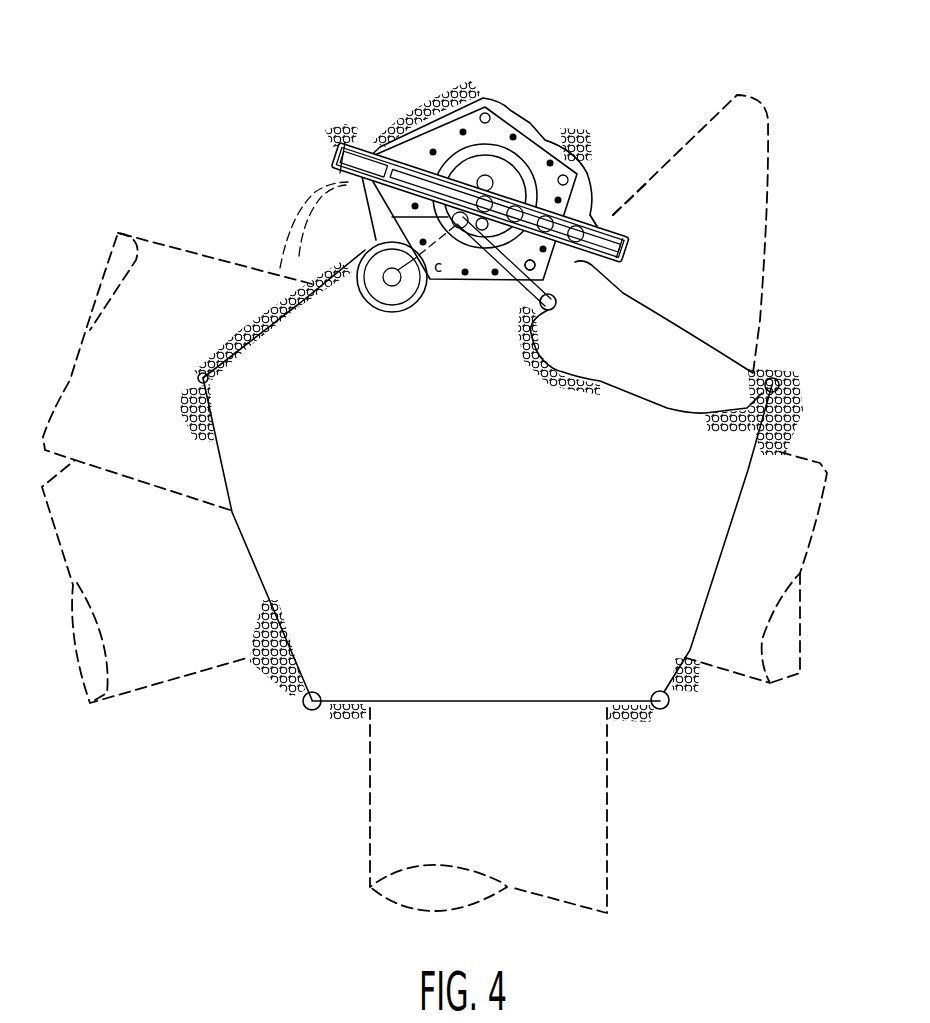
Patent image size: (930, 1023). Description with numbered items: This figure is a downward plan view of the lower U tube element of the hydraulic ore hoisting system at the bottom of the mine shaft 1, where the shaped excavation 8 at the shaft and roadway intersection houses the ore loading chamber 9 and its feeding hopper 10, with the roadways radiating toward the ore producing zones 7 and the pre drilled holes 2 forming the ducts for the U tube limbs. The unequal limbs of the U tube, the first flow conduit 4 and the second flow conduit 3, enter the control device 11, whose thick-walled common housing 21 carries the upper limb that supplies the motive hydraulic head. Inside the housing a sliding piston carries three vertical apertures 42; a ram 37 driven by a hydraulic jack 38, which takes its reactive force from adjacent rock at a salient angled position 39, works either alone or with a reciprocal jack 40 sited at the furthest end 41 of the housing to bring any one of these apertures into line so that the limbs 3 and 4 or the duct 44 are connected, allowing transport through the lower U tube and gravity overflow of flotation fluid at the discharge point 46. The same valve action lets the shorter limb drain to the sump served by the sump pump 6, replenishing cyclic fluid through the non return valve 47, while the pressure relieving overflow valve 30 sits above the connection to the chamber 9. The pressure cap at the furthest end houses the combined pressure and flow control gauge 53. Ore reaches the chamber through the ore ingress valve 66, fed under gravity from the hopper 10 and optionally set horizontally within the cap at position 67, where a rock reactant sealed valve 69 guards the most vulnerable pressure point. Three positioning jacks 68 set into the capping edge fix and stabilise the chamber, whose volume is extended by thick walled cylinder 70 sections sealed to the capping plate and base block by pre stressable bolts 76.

The mine shaft 1 is at (718, 637).
The pre drilled holes 2 is at (320, 690).
The second flow conduit (upper limb of U tube) 3 is at (443, 80).
The first flow conduit (limb of U tube) 4 is at (505, 210).
The gravity discharge point 46 is at (505, 210).
The sump pump 6 is at (553, 306).
The ore producing zones 7 is at (215, 655).
The shaped excavation 8 is at (552, 137).
The ore loading chamber 9 is at (547, 132).
The feeding hopper 10 is at (373, 285).
The control device 11 is at (337, 153).
The common housing 21 is at (600, 214).
The pressure relieving overflow valve 30 is at (500, 160).
The ram 37 is at (340, 182).
The hydraulic jack 38 is at (373, 109).
The reciprocal jack 40 is at (363, 143).
The salient angled position 39 is at (363, 164).
The furthest end of common housing 41 is at (529, 219).
The vertical apertures 42 is at (527, 253).
The duct 44 is at (590, 215).
The non return valve 47 is at (478, 253).
The combined pressure and flow control gauge 53 is at (619, 248).
The ore ingress valve 66 is at (447, 277).
The position of ore ingress valve in pressure cap 67 is at (428, 237).
The positioning jacks 68 is at (443, 143).
The rock reactant sealed valve 69 is at (397, 208).
The thick walled cylinder 70 is at (507, 170).
The pre stressable bolts 76 is at (447, 140).